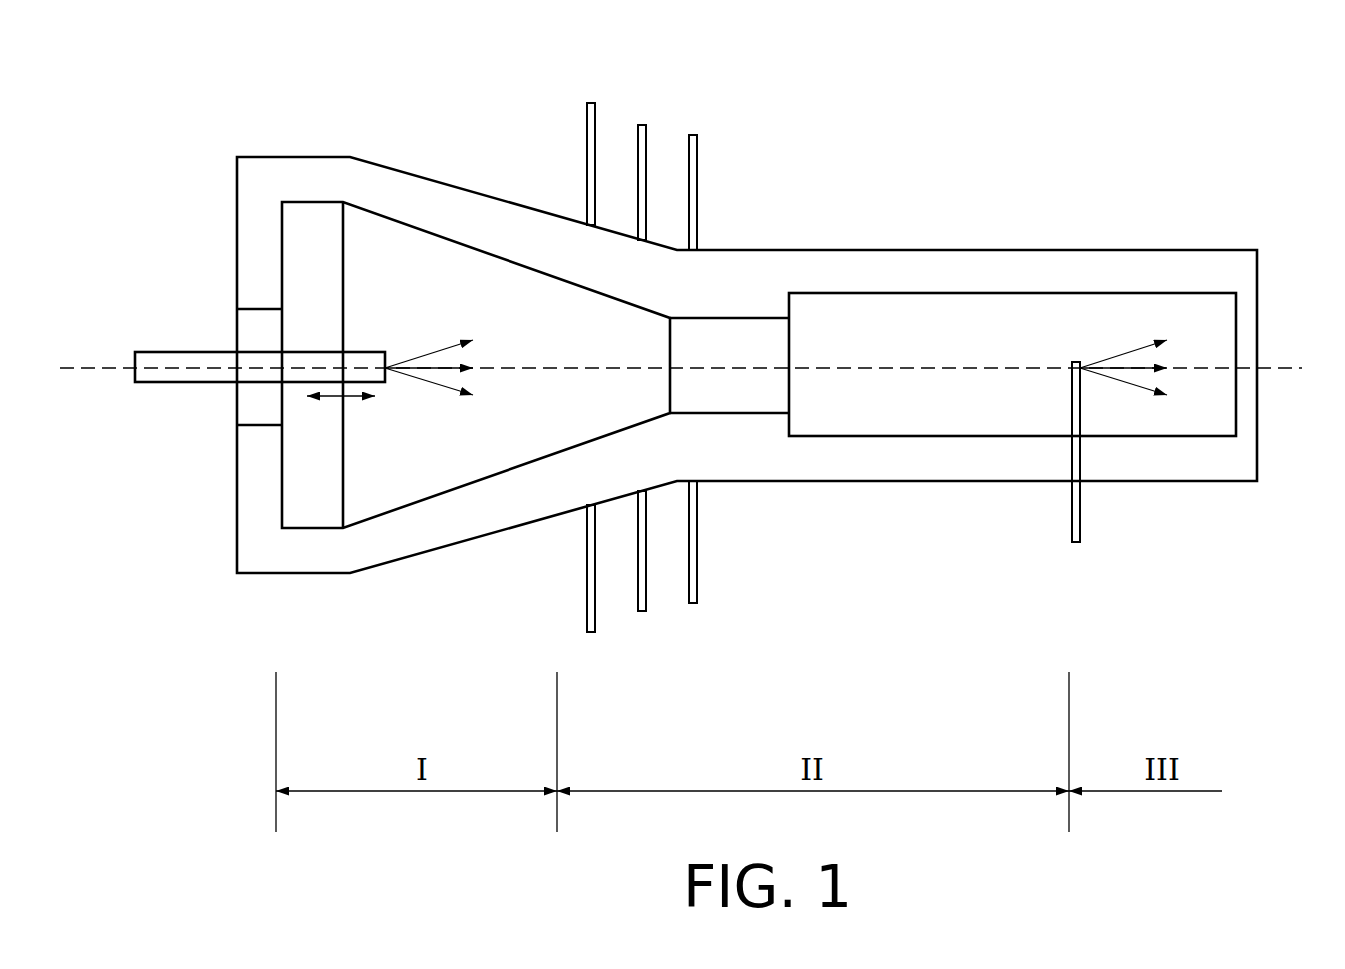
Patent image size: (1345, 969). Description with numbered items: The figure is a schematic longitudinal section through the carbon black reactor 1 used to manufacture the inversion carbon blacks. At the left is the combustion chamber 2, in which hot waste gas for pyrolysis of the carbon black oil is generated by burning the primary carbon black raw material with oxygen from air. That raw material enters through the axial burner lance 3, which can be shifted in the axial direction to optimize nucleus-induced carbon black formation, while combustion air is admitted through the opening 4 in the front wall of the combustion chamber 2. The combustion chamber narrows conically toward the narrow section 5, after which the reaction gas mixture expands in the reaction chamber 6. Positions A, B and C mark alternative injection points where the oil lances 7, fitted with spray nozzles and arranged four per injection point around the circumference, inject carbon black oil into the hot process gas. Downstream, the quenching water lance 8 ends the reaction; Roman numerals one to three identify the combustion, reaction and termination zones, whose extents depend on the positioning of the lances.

The carbon black reactor 1 is at (872, 250).
The combustion chamber 2 is at (415, 265).
The axial burner lance 3 is at (157, 363).
The opening 4 is at (252, 335).
The narrow section 5 is at (717, 333).
The reaction chamber 6 is at (1023, 318).
The oil lances 7 is at (595, 565).
The quenching water lance 8 is at (1080, 517).